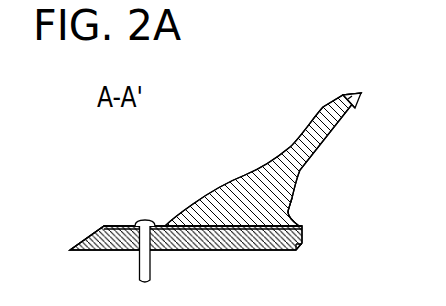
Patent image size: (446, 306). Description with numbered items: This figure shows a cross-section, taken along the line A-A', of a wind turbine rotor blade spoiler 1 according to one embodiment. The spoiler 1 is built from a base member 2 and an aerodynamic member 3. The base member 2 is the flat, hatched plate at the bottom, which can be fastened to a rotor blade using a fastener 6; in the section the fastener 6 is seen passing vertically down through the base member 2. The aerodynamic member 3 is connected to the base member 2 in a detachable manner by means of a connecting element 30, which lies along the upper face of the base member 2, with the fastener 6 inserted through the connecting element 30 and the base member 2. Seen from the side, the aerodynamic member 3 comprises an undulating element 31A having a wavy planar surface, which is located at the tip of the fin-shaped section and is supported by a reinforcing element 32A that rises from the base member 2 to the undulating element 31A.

The wind turbine rotor blade spoiler 1 is at (208, 167).
The base member 2 is at (245, 250).
The aerodynamic member 3 is at (272, 178).
The fastener 6 is at (152, 266).
The connecting element 30 is at (113, 224).
The undulating element 31A is at (348, 93).
The reinforcing element 32A is at (293, 211).